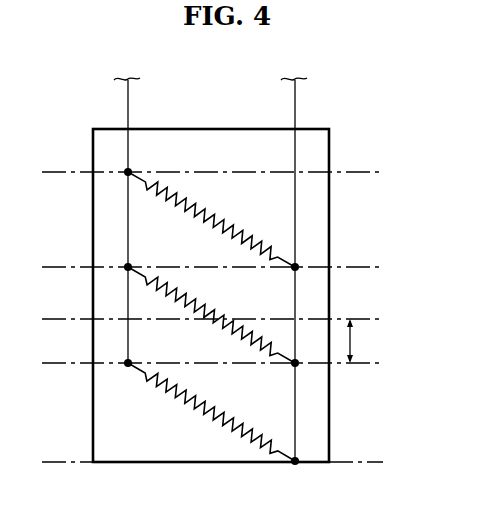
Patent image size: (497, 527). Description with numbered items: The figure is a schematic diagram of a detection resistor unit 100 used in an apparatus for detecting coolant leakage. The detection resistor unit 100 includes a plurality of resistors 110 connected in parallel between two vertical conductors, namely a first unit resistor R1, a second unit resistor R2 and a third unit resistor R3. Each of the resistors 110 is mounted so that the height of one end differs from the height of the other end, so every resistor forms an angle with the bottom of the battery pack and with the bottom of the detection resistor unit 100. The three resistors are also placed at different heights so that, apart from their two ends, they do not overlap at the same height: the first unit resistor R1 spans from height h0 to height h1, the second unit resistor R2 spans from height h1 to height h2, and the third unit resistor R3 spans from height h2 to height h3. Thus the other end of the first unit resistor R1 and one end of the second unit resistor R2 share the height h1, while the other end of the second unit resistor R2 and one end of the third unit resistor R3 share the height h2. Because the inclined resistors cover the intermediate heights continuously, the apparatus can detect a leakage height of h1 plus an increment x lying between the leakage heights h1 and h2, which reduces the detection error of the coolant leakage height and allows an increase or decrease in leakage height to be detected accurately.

The detection resistor unit 100 is at (227, 128).
The plurality of resistors 110 is at (211, 316).
The first unit resistor R1 is at (211, 412).
The second unit resistor R2 is at (211, 315).
The third unit resistor R3 is at (211, 219).
The height h0 is at (224, 462).
The height h1 is at (224, 363).
The height h2 is at (224, 267).
The height h3 is at (224, 172).
The leakage height increment x is at (355, 341).